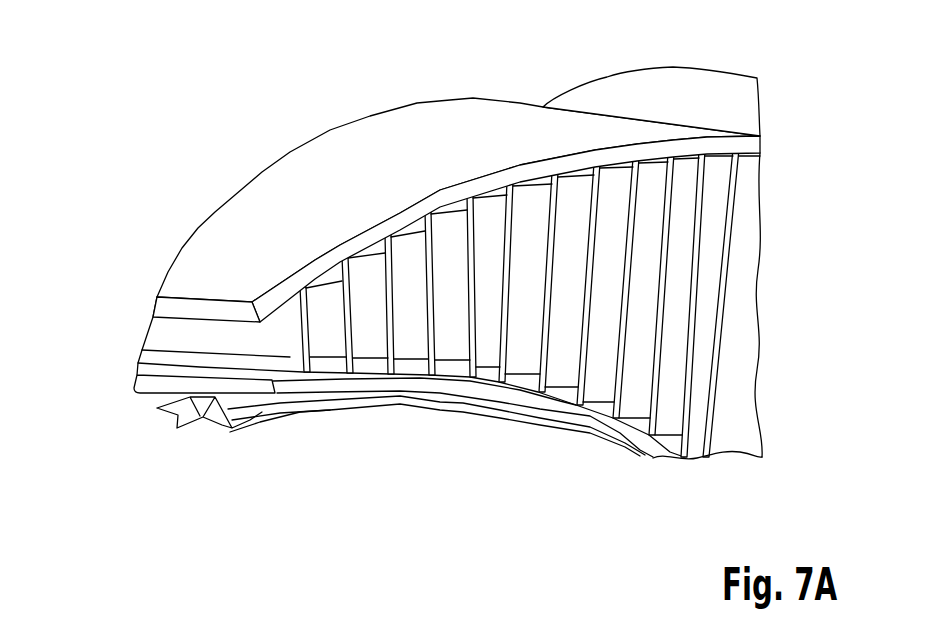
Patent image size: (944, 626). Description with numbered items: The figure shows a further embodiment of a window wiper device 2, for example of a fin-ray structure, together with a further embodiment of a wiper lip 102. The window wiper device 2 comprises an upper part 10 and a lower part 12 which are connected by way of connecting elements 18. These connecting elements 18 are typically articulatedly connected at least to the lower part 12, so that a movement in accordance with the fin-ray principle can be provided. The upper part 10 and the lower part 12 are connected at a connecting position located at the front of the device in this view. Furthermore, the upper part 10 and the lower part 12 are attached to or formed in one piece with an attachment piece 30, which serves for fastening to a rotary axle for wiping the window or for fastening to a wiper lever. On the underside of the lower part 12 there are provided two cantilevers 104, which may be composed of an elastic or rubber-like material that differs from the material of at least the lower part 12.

The window wiper device 2 is at (439, 267).
The upper part 10 is at (425, 120).
The lower part 12 is at (140, 383).
The connecting elements 18 is at (348, 310).
The attachment piece 30 is at (690, 87).
The wiper lip 102 is at (184, 443).
The cantilever 104 is at (158, 414).